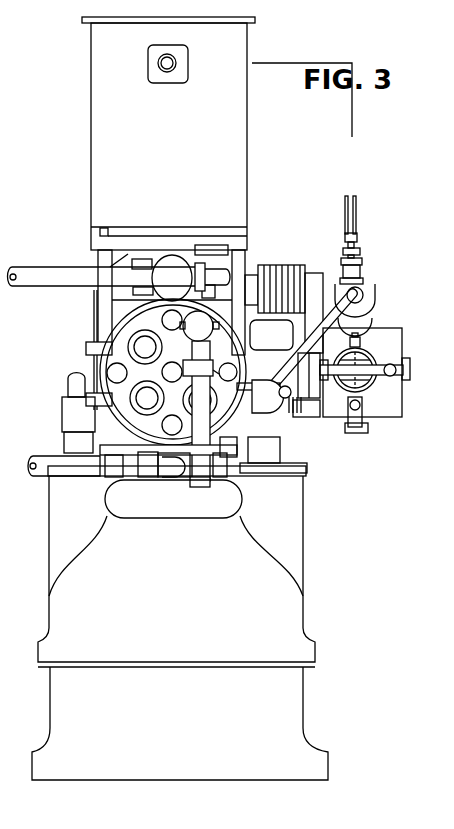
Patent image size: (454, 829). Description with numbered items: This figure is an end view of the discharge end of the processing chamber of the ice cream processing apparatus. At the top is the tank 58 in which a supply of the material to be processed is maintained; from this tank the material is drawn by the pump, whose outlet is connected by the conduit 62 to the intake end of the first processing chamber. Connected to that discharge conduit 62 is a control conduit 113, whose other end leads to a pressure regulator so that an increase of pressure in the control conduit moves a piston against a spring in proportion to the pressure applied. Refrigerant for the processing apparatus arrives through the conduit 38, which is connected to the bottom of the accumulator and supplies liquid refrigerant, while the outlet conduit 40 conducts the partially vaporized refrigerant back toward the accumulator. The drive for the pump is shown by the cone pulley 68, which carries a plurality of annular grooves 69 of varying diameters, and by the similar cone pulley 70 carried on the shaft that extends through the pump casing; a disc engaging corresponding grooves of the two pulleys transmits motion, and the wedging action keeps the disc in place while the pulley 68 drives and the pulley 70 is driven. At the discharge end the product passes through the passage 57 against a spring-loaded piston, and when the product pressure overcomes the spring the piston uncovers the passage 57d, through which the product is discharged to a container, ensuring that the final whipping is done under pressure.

The tank 58 is at (168, 133).
The outlet conduit 40 is at (20, 270).
The passage 57 is at (195, 325).
The passage 57d is at (200, 488).
The conduit 38 is at (40, 471).
The conduit 62 is at (372, 331).
The cone pulley 68 is at (288, 269).
The annular grooves 69 is at (279, 278).
The cone pulley 70 is at (305, 418).
The control conduit 113 is at (352, 199).